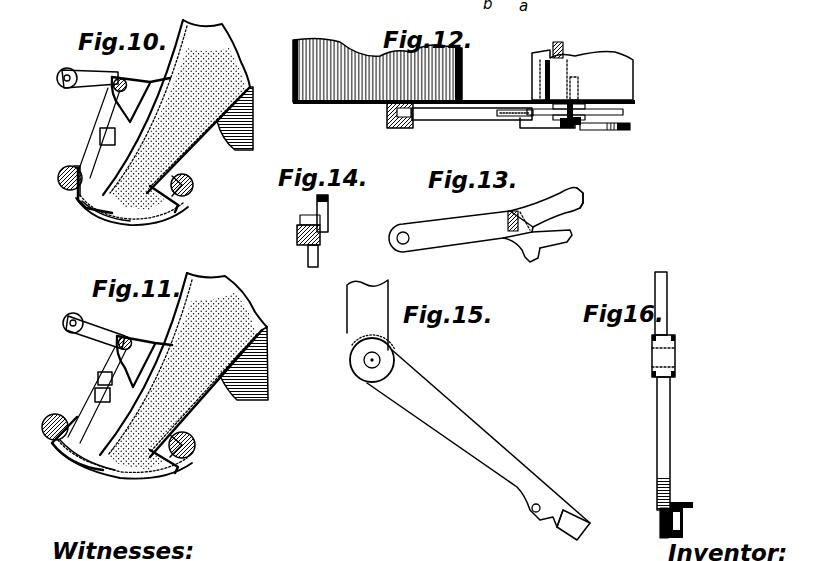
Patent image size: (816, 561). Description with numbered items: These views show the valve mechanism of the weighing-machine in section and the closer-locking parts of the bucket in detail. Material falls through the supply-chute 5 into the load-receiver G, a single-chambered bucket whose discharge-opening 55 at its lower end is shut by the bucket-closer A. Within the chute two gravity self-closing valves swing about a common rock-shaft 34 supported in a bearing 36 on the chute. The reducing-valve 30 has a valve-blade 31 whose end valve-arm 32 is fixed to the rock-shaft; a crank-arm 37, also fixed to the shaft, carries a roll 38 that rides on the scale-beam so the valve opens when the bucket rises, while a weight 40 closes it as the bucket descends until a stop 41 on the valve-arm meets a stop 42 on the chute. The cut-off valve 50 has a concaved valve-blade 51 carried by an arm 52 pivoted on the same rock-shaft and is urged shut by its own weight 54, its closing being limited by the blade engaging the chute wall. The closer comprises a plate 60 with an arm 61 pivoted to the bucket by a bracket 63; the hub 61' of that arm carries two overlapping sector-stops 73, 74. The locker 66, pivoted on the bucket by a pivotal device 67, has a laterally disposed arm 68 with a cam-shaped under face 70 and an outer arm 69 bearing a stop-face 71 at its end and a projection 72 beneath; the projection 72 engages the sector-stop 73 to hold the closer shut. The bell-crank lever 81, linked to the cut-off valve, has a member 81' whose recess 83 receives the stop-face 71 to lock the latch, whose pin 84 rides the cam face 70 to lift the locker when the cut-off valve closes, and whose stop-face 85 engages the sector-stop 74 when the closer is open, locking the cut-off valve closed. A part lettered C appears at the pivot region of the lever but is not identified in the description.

In FIG. 10, the supply-chute 5 is at (200, 53).
In FIG. 11, the supply-chute 5 is at (203, 289).
In FIG. 10, the reducing-valve 30 is at (82, 198).
In FIG. 11, the reducing-valve 30 is at (70, 444).
In FIG. 10, the valve-blade 31 is at (88, 212).
In FIG. 11, the valve-blade 31 is at (92, 472).
In FIG. 10, the valve-arm 32 is at (78, 188).
In FIG. 11, the valve-arm 32 is at (95, 395).
In FIG. 10, the rock-shaft 34 is at (128, 80).
In FIG. 11, the rock-shaft 34 is at (128, 337).
In FIG. 10, the bearing 36 is at (114, 93).
In FIG. 11, the bearing 36 is at (117, 348).
In FIG. 10, the crank-arm 37 is at (93, 81).
In FIG. 11, the crank-arm 37 is at (108, 308).
In FIG. 10, the roll 38 is at (60, 71).
In FIG. 11, the roll 38 is at (70, 333).
In FIG. 10, the weight 40 is at (90, 165).
In FIG. 11, the weight 40 is at (53, 441).
In FIG. 10, the stop 41 is at (100, 137).
In FIG. 11, the stop 41 is at (98, 378).
In FIG. 10, the stop 42 is at (141, 112).
In FIG. 11, the stop 42 is at (134, 380).
In FIG. 10, the cut-off valve 50 is at (173, 207).
In FIG. 11, the cut-off valve 50 is at (175, 468).
In FIG. 10, the concaved valve-blade 51 is at (140, 222).
In FIG. 11, the concaved valve-blade 51 is at (157, 478).
In FIG. 10, the arm 52 is at (162, 187).
In FIG. 11, the arm 52 is at (160, 450).
In FIG. 10, the weight 54 is at (185, 192).
In FIG. 11, the weight 54 is at (187, 445).
In FIG. 12, the load-receiver G is at (327, 50).
In FIG. 12, the bucket-closer A is at (525, 79).
In FIG. 12, the discharge-opening 55 is at (466, 70).
In FIG. 12, the closer plate 60 is at (531, 58).
In FIG. 12, the closer arm 61 is at (539, 91).
In FIG. 12, the hub 61' is at (612, 97).
In FIG. 12, the bracket 63 is at (579, 84).
In FIG. 12, the locker 66 is at (481, 114).
In FIG. 13, the locker 66 is at (480, 230).
In FIG. 14, the locker 66 is at (310, 225).
In FIG. 12, the pivotal device 67 is at (390, 128).
In FIG. 12, the arm 68 is at (575, 111).
In FIG. 13, the arm 68 is at (555, 243).
In FIG. 14, the arm 68 is at (320, 248).
In FIG. 12, the outer arm 69 is at (547, 128).
In FIG. 13, the outer arm 69 is at (556, 203).
In FIG. 14, the outer arm 69 is at (328, 203).
In FIG. 13, the cam-shaped under face 70 is at (584, 204).
In FIG. 12, the stop-face 71 is at (575, 118).
In FIG. 13, the stop-face 71 is at (575, 233).
In FIG. 12, the projection 72 is at (513, 118).
In FIG. 13, the projection 72 is at (530, 262).
In FIG. 14, the projection 72 is at (312, 266).
In FIG. 12, the sector-stop 73 is at (577, 120).
In FIG. 12, the sector-stop 74 is at (618, 128).
In FIG. 15, the bell-crank lever 81 is at (352, 315).
In FIG. 16, the bell-crank lever 81 is at (676, 303).
In FIG. 15, the member 81' is at (478, 438).
In FIG. 16, the member 81' is at (682, 443).
In FIG. 15, the recess 83 is at (563, 511).
In FIG. 16, the recess 83 is at (660, 527).
In FIG. 15, the pin 84 is at (530, 512).
In FIG. 16, the pin 84 is at (690, 504).
In FIG. 15, the stop-face 85 is at (563, 536).
In FIG. 16, the stop-face 85 is at (685, 530).
In FIG. 15, the collar C is at (383, 358).
In FIG. 16, the collar C is at (672, 356).